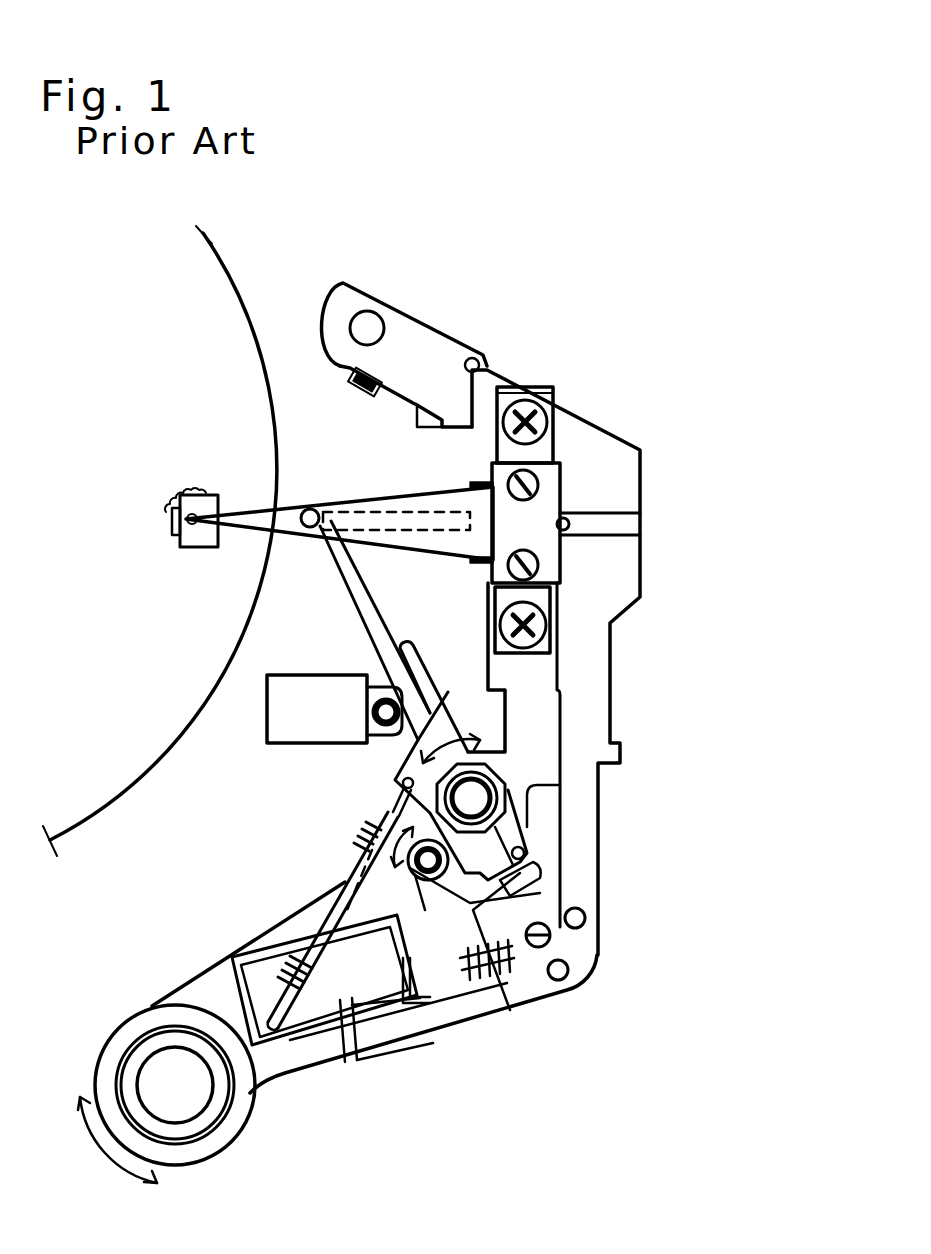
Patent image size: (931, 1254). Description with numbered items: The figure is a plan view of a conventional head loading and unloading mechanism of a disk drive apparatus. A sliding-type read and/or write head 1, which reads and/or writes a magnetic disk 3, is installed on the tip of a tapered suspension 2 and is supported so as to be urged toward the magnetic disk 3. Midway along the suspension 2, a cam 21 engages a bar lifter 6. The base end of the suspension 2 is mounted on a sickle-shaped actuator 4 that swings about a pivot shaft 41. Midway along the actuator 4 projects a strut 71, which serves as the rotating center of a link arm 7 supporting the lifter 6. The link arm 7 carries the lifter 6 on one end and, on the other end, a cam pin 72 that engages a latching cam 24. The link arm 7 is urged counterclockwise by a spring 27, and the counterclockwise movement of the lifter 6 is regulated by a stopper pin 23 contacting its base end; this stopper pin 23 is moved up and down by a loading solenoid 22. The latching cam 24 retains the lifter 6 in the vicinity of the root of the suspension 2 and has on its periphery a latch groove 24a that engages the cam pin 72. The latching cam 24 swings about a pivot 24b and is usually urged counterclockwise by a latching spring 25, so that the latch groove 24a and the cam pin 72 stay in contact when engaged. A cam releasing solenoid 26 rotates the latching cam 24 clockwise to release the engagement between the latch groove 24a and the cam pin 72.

The read and/or write head 1 is at (200, 548).
The suspension 2 is at (339, 498).
The cam 21 is at (393, 490).
The magnetic disk 3 is at (120, 777).
The actuator 4 is at (600, 417).
The pivot shaft 41 is at (193, 1103).
The lifter 6 is at (347, 592).
The link arm 7 is at (536, 762).
The strut 71 is at (477, 800).
The cam pin 72 is at (528, 845).
The loading solenoid 22 is at (306, 748).
The stopper pin 23 is at (380, 742).
The latching cam 24 is at (386, 1027).
The latch groove 24a is at (535, 898).
The pivot 24b is at (428, 875).
The latching spring 25 is at (473, 975).
The cam releasing solenoid 26 is at (265, 962).
The spring 27 is at (357, 826).